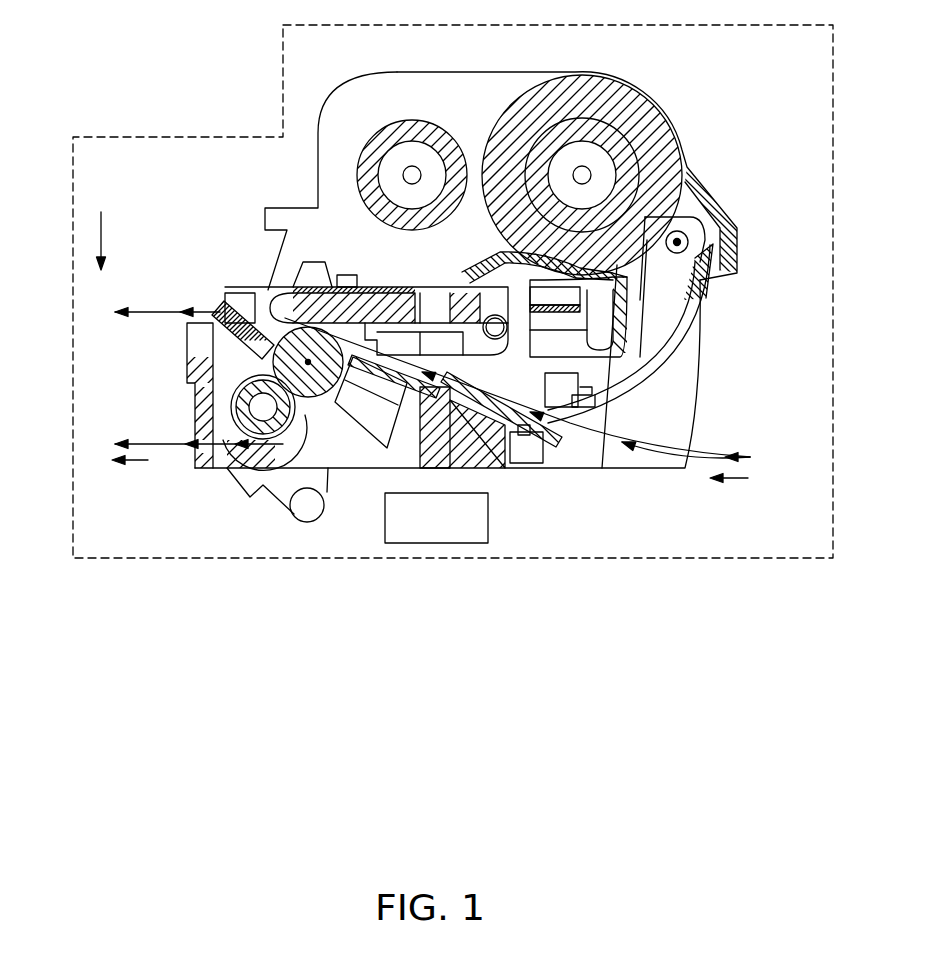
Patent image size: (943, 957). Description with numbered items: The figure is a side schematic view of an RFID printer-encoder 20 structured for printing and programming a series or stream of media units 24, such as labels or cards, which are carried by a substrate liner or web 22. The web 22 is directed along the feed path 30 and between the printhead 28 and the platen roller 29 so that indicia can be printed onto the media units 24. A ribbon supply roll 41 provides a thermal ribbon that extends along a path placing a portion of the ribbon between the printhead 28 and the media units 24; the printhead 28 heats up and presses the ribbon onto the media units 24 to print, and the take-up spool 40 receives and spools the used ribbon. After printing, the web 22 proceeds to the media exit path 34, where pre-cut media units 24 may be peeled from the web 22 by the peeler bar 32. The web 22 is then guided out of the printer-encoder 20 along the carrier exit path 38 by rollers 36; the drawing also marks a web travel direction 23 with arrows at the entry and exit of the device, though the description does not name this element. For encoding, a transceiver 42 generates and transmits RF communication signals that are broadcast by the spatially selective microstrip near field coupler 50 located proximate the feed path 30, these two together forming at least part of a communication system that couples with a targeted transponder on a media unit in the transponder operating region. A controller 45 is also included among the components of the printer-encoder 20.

The RFID printer-encoder 20 is at (180, 136).
The web 22 is at (536, 392).
The sheet 23 is at (215, 322).
The media units 24 is at (145, 307).
The printhead 28 is at (293, 295).
The platen roller 29 is at (250, 398).
The feed path 30 is at (748, 479).
The peeler bar 32 is at (258, 357).
The media exit path 34 is at (103, 227).
The rollers 36 is at (255, 423).
The carrier exit path 38 is at (122, 472).
The take-up spool 40 is at (423, 125).
The ribbon supply roll 41 is at (627, 98).
The transceiver 42 is at (418, 531).
The controller 45 is at (567, 383).
The near field coupler 50 is at (350, 390).